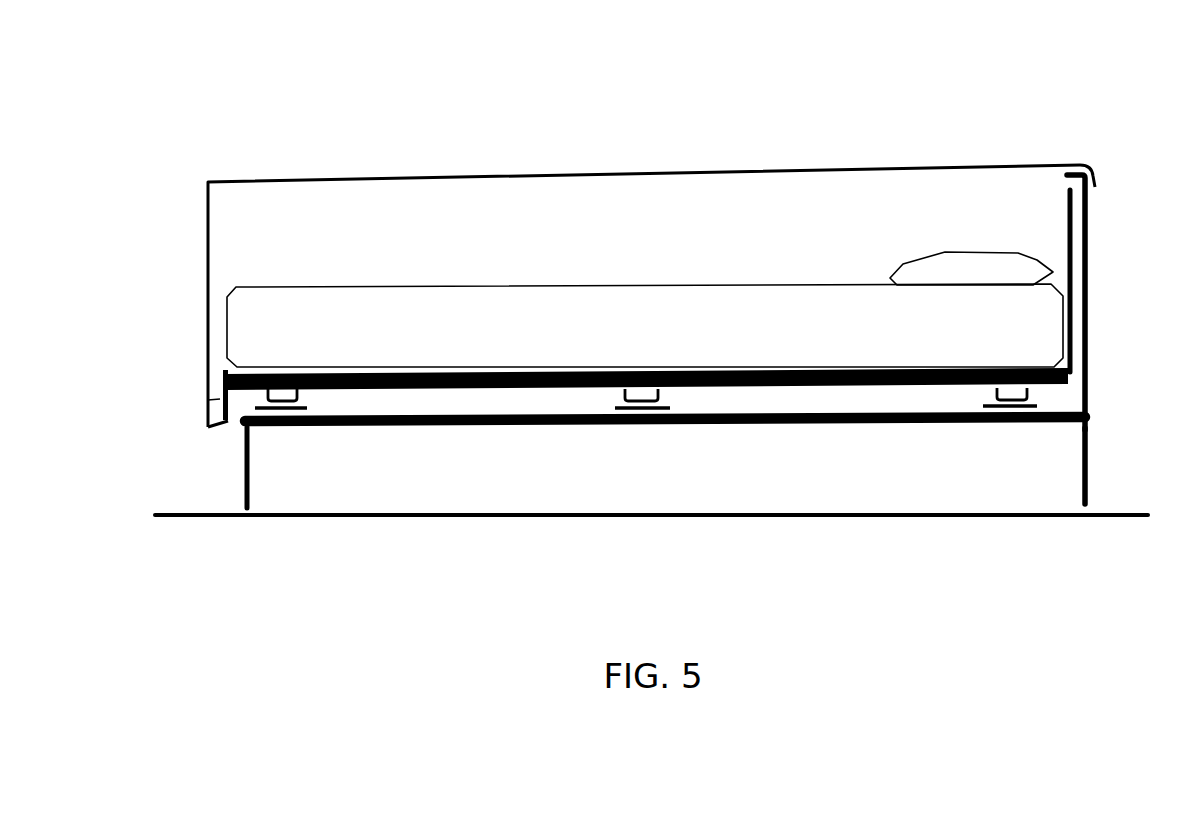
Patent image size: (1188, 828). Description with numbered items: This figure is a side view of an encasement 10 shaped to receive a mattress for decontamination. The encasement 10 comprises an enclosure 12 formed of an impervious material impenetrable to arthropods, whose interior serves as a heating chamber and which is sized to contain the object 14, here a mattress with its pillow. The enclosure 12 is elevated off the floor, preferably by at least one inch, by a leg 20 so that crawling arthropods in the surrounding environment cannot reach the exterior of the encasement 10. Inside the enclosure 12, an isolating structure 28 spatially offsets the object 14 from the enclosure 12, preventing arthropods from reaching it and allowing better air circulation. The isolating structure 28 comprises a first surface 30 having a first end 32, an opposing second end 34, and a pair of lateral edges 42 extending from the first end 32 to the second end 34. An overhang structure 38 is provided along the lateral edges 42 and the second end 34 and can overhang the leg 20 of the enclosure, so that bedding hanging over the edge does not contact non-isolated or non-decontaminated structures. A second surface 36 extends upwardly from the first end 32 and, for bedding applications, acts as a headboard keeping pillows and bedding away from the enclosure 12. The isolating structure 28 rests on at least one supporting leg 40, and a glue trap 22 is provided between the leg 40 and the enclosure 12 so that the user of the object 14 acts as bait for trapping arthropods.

The encasement 10 is at (1104, 143).
The enclosure 12 is at (1093, 393).
The object 14 is at (1027, 330).
The leg 20 is at (1093, 468).
The trap 22 is at (673, 402).
The isolating structure 28 is at (787, 372).
The first surface 30 is at (920, 390).
The first end 32 is at (1050, 392).
The second end 34 is at (243, 395).
The second surface 36 is at (1067, 222).
The overhang structure 38 is at (216, 399).
The supporting leg 40 is at (620, 397).
The lateral edges 42 is at (472, 390).